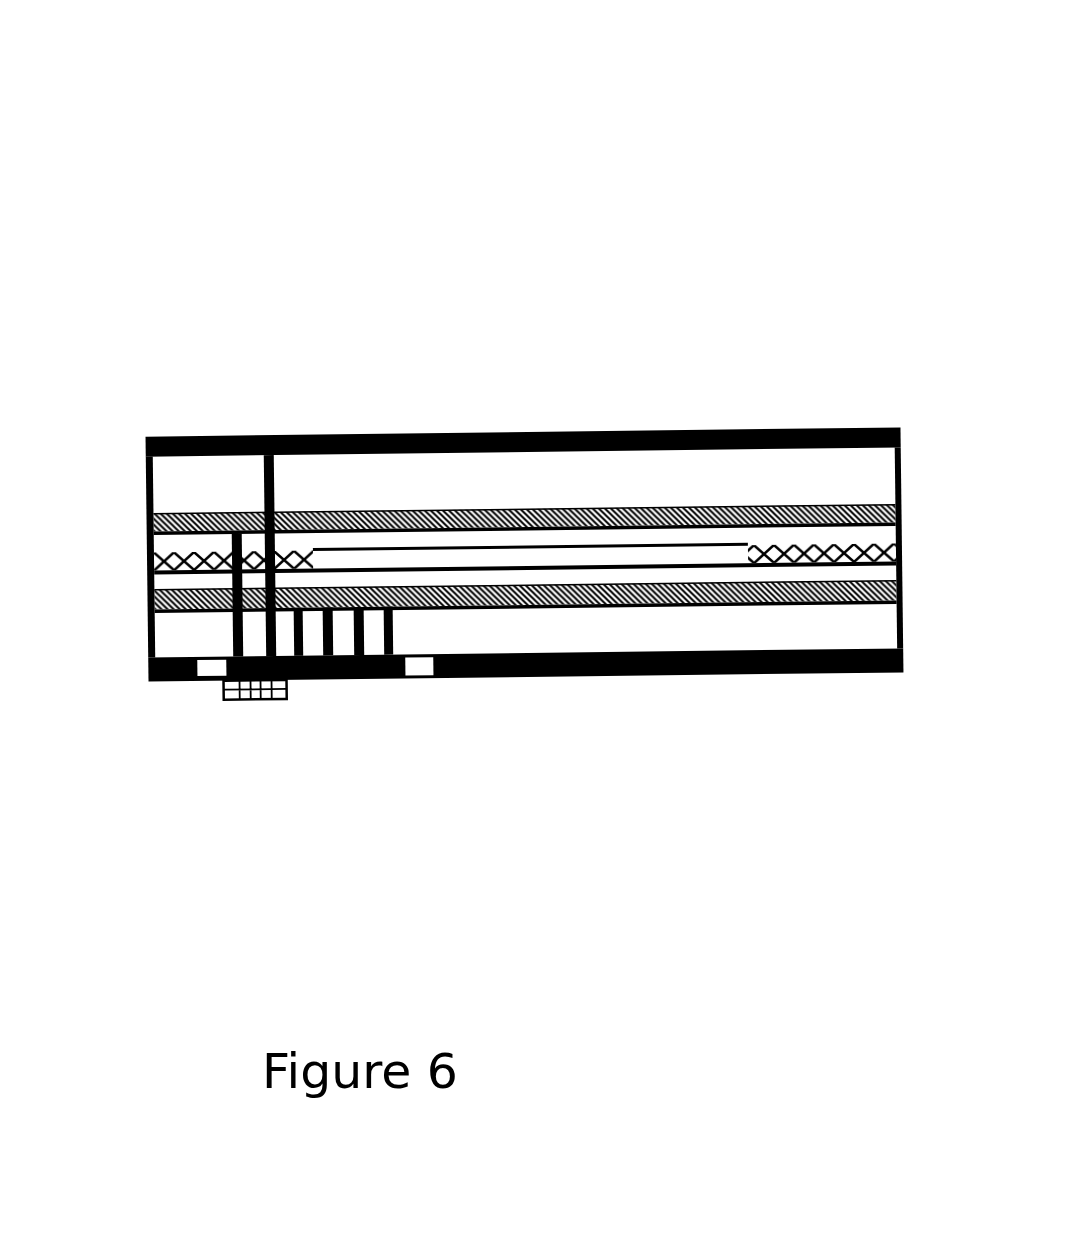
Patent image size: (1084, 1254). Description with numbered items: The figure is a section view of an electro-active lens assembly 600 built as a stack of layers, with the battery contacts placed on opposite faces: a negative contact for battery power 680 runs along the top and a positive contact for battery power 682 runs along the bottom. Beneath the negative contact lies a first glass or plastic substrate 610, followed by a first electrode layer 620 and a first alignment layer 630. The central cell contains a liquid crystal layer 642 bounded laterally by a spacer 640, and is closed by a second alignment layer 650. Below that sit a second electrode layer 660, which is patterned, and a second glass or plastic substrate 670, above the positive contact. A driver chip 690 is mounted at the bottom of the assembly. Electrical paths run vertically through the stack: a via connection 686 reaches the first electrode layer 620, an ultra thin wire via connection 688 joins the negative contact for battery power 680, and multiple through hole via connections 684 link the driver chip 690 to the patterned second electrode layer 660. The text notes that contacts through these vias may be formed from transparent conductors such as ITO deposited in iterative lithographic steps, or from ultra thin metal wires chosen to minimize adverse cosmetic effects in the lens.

The electro-active lens assembly 600 is at (494, 549).
The first glass or plastic substrate 610 is at (240, 478).
The first electrode layer 620 is at (433, 514).
The first alignment layer 630 is at (512, 537).
The spacer 640 is at (765, 550).
The liquid crystal layer 642 is at (594, 556).
The second alignment layer 650 is at (815, 577).
The second electrode layer 660 is at (865, 582).
The second glass or plastic substrate 670 is at (883, 627).
The negative contact for battery power 680 is at (165, 435).
The positive contact for battery power 682 is at (690, 675).
The multiple through hole via connections 684 is at (362, 635).
The via connection 686 is at (232, 623).
The ultra thin wire via connection 688 is at (278, 488).
The driver chip 690 is at (255, 698).